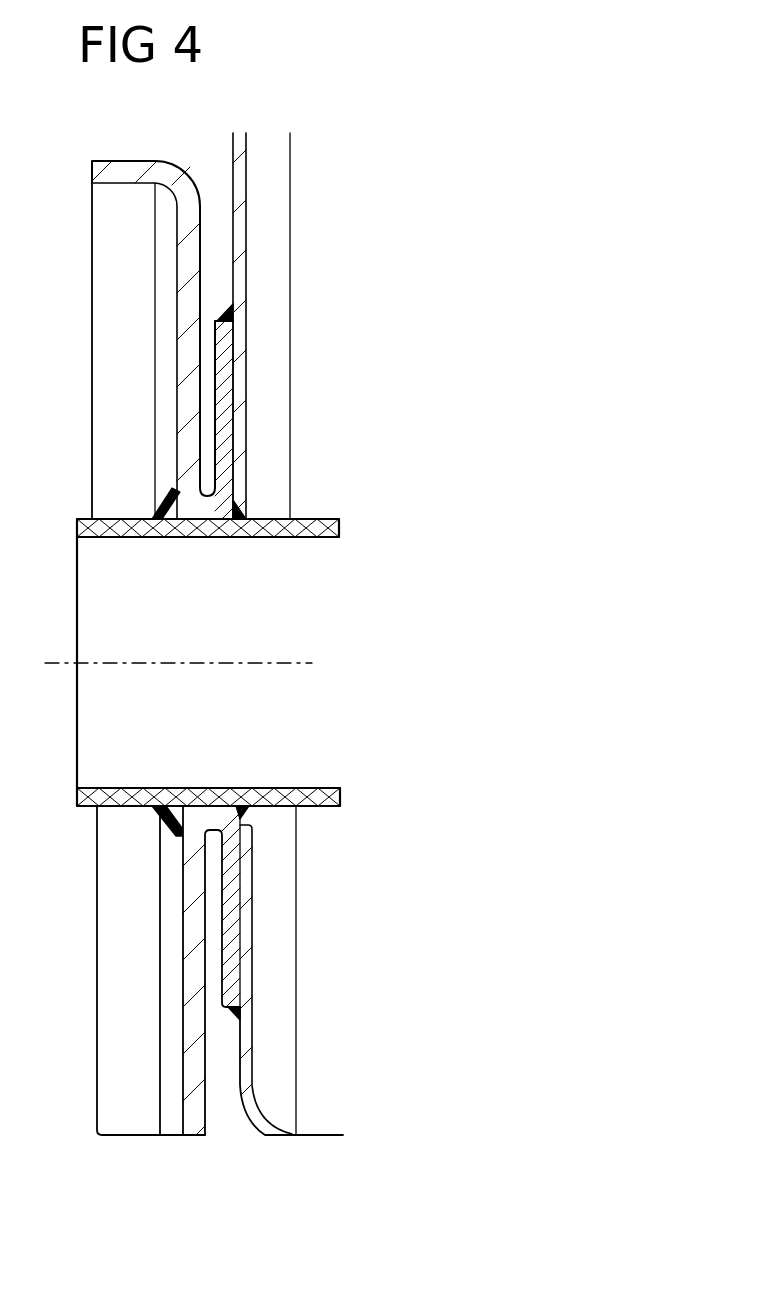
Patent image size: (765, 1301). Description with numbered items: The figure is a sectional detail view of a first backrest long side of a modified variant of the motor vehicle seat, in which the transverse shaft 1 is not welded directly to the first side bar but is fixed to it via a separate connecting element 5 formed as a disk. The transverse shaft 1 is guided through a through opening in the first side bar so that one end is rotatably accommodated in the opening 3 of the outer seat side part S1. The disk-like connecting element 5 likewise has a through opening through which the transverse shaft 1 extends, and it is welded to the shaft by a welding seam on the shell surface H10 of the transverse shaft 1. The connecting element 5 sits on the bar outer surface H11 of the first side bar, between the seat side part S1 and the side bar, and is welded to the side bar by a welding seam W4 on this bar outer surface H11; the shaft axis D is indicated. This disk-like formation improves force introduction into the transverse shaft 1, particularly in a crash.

The transverse shaft 1 is at (297, 592).
The opening 3 is at (203, 537).
The connecting element 5 is at (240, 953).
The axis D is at (166, 665).
The shell surface H10 is at (247, 440).
The bar outer surface H11 is at (247, 1117).
The welding seam W4 is at (233, 1010).
The outer seat side part S1 is at (148, 1043).